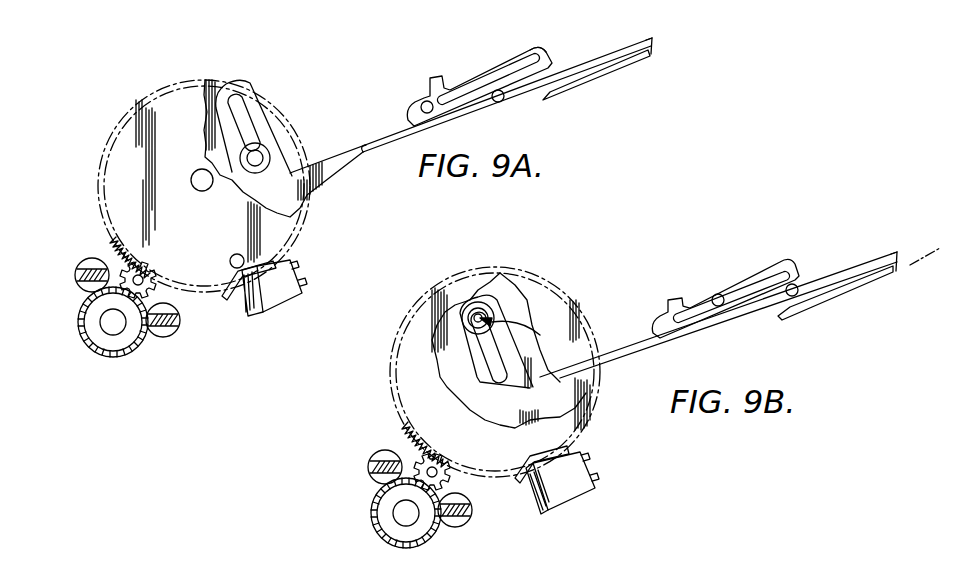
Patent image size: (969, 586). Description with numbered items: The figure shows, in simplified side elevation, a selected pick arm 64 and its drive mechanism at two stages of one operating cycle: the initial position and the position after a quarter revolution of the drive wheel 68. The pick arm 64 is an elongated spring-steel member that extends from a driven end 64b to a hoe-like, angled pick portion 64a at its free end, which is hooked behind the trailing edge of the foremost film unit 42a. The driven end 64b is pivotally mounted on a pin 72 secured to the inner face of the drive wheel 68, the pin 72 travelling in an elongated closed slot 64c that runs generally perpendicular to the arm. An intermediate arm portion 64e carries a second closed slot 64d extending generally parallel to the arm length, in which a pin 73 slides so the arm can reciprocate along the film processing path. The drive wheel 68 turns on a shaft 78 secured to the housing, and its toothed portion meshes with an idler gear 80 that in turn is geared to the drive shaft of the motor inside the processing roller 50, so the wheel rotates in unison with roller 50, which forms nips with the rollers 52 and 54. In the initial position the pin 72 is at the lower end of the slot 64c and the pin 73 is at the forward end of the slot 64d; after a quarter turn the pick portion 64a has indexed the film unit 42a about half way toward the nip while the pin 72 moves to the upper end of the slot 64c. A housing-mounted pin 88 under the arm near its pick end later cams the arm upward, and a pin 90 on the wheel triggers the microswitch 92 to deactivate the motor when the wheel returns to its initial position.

In FIG. 9A, the foremost film unit 42a is at (617, 72).
In FIG. 9B, the foremost film unit 42a is at (833, 297).
In FIG. 9A, the processing roller 50 is at (82, 313).
In FIG. 9B, the processing roller 50 is at (375, 503).
In FIG. 9A, the processing roller 52 is at (86, 280).
In FIG. 9B, the processing roller 52 is at (369, 469).
In FIG. 9A, the processing roller 54 is at (168, 333).
In FIG. 9B, the processing roller 54 is at (463, 520).
In FIG. 9A, the pick arm 64 is at (381, 109).
In FIG. 9B, the pick arm 64 is at (620, 325).
In FIG. 9A, the pick portion 64a is at (655, 42).
In FIG. 9B, the pick portion 64a is at (897, 252).
In FIG. 9A, the driven end 64b is at (240, 83).
In FIG. 9B, the driven end 64b is at (509, 350).
In FIG. 9A, the closed slot 64c is at (247, 128).
In FIG. 9B, the closed slot 64c is at (489, 347).
In FIG. 9A, the closed slot 64d is at (509, 72).
In FIG. 9B, the closed slot 64d is at (725, 298).
In FIG. 9A, the arm portion 64e is at (546, 50).
In FIG. 9A, the drive wheel 68 is at (112, 125).
In FIG. 9B, the drive wheel 68 is at (432, 293).
In FIG. 9A, the pin 72 is at (262, 152).
In FIG. 9B, the pin 72 is at (501, 318).
In FIG. 9A, the pin 73 is at (419, 104).
In FIG. 9B, the pin 73 is at (718, 300).
In FIG. 9A, the shaft 78 is at (194, 176).
In FIG. 9A, the idler gear 80 is at (126, 272).
In FIG. 9B, the idler gear 80 is at (418, 458).
In FIG. 9A, the pin 88 is at (500, 103).
In FIG. 9B, the pin 88 is at (792, 290).
In FIG. 9A, the pin 90 is at (231, 257).
In FIG. 9A, the microswitch 92 is at (288, 287).
In FIG. 9B, the microswitch 92 is at (560, 478).